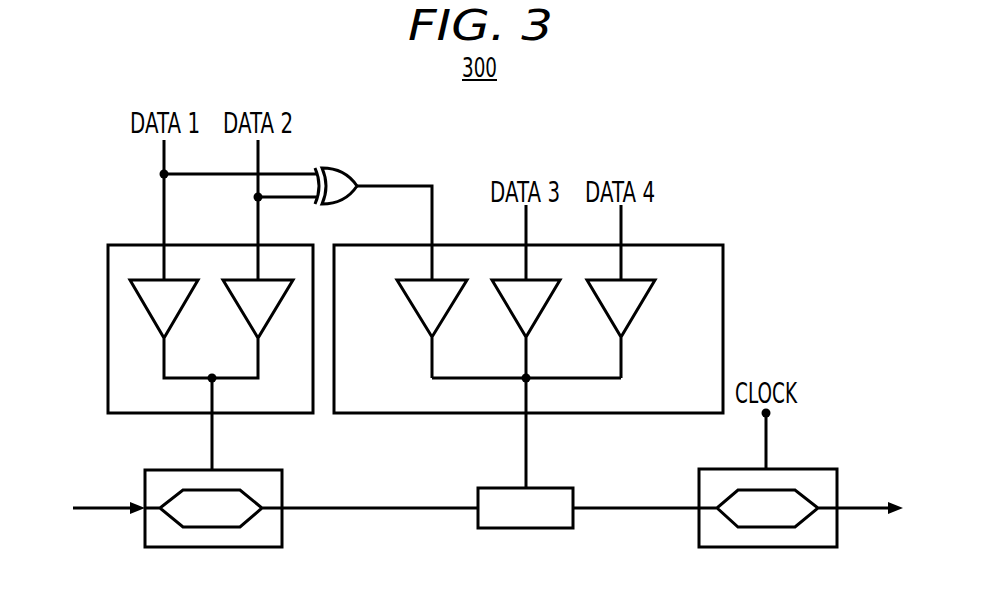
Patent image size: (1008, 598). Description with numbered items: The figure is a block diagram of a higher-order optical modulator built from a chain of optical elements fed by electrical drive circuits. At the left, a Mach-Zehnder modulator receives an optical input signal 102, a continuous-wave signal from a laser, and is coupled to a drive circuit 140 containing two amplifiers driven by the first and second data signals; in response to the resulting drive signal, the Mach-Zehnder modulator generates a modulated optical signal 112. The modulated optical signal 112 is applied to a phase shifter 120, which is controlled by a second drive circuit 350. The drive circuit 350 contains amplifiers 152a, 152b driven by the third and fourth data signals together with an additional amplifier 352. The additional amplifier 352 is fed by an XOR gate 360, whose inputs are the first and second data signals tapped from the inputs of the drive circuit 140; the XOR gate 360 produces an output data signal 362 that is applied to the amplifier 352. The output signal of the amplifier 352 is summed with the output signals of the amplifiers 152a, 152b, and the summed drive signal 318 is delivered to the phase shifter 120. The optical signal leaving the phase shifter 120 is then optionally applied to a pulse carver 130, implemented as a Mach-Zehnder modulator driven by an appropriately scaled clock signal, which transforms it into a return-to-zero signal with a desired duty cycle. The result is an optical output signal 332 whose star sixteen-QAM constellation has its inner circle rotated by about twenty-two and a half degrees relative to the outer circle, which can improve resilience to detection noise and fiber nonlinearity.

The optical input signal 102 is at (108, 511).
The modulated optical signal 112 is at (387, 509).
The phase shifter 120 is at (545, 521).
The pulse carver 130 is at (778, 547).
The drive circuit 140 is at (127, 245).
The amplifier 152a is at (542, 312).
The amplifier 152b is at (636, 312).
The drive signal line 318 is at (528, 445).
The optical output signal 332 is at (872, 510).
The drive circuit 350 is at (538, 306).
The amplifier 352 is at (413, 312).
The XOR gate 360 is at (355, 147).
The output data signal 362 is at (414, 184).